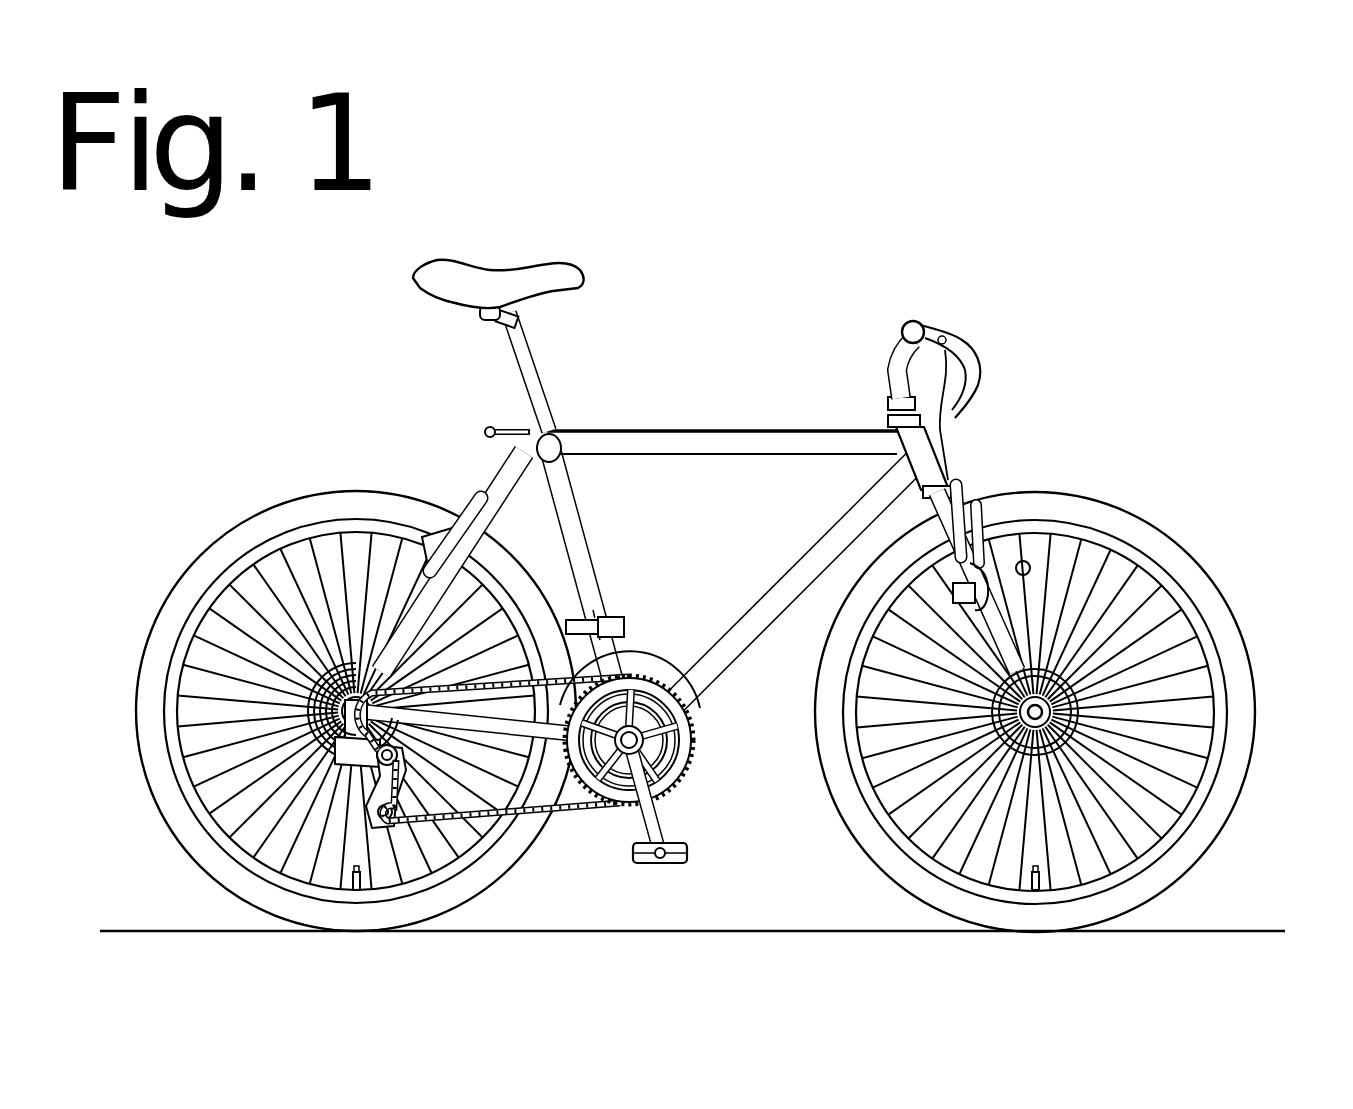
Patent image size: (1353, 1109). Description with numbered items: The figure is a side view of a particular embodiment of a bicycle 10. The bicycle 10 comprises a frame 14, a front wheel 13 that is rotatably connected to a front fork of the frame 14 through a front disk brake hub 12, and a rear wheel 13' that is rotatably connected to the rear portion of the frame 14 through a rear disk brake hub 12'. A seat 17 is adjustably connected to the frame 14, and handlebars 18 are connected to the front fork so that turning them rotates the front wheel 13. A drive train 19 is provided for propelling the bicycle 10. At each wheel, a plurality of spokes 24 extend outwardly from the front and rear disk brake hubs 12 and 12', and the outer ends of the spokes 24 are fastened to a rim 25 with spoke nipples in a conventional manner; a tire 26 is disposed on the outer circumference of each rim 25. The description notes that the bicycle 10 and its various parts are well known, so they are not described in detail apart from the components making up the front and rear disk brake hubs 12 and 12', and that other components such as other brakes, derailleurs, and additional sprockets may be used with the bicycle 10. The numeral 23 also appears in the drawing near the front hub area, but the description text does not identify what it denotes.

The bicycle 10 is at (712, 581).
The front disk brake hub 12 is at (1070, 673).
The rear disk brake hub 12' is at (354, 673).
The front wheel 13 is at (1035, 673).
The rear wheel 13' is at (354, 687).
The frame 14 is at (590, 557).
The seat 17 is at (552, 292).
The handlebars 18 is at (911, 320).
The drive train 19 is at (572, 826).
The hub 23 is at (1080, 697).
The spokes 24 is at (300, 570).
The rim 25 is at (313, 557).
The tire 26 is at (402, 497).